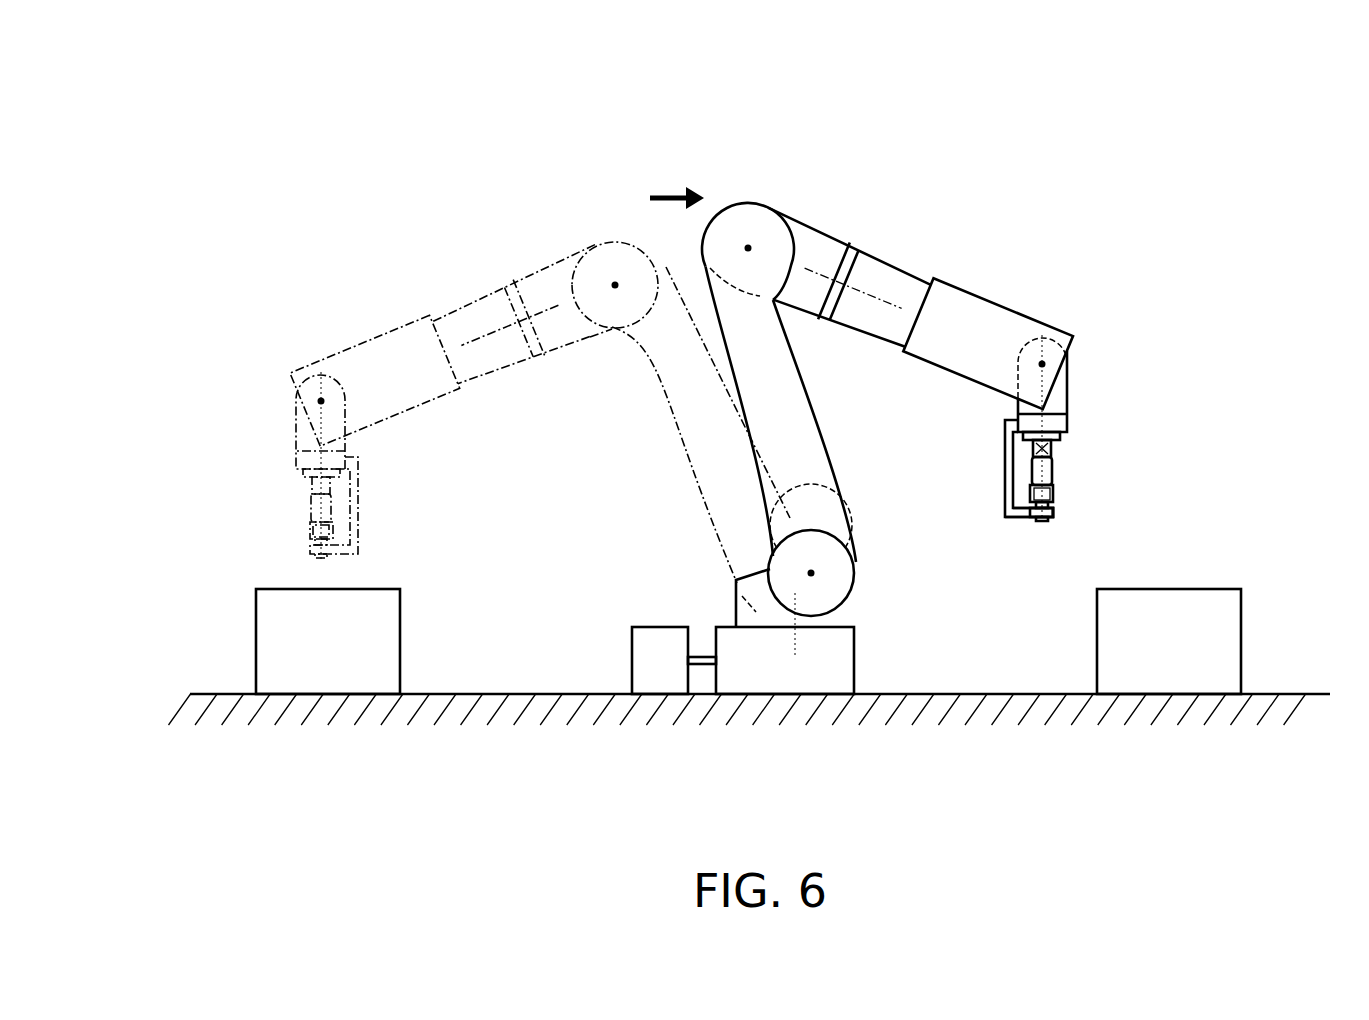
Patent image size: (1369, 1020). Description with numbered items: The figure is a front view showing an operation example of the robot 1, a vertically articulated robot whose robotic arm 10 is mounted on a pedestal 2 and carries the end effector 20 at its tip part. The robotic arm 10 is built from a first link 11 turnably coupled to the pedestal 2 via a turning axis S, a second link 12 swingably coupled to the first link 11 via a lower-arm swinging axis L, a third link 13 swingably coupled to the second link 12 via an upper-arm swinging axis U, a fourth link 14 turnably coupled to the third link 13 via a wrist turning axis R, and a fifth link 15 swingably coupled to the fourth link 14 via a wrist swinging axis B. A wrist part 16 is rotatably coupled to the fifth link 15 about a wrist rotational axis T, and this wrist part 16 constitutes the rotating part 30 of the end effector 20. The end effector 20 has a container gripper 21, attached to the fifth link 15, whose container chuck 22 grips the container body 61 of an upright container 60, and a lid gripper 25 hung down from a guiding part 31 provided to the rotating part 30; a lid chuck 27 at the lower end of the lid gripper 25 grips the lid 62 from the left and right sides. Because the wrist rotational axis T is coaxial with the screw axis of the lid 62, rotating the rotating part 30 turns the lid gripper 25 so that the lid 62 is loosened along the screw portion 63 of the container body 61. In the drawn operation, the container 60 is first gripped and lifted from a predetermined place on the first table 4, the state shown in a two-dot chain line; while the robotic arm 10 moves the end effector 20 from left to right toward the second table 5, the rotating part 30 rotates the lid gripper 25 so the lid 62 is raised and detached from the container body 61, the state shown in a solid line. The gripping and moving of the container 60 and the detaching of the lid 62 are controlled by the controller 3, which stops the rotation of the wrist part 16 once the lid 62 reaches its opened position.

The robot 1 is at (670, 127).
The pedestal 2 is at (768, 683).
The controller 3 is at (656, 683).
The first table 4 is at (270, 645).
The second table 5 is at (1228, 600).
The robotic arm 10 is at (915, 420).
The first link 11 is at (752, 577).
The second link 12 is at (816, 438).
The third link 13 is at (828, 245).
The fourth link 14 is at (978, 303).
The fifth link 15 is at (1070, 428).
The wrist part 16 is at (685, 414).
The end effector 20 is at (1225, 425).
The container gripper 21 is at (1010, 522).
The container chuck 22 is at (1040, 520).
The lid gripper 25 is at (1058, 478).
The lid chuck 27 is at (1057, 488).
The rotating part 30 is at (1060, 437).
The guiding part 31 is at (1055, 456).
The container 60 is at (1213, 512).
The container body 61 is at (1057, 510).
The lid 62 is at (1057, 495).
The screw portion 63 is at (1057, 500).
The upper-arm swinging axis U is at (749, 247).
The wrist turning axis R is at (898, 305).
The wrist swinging axis B is at (1044, 364).
The wrist rotational axis T is at (1055, 450).
The lower-arm swinging axis L is at (813, 573).
The turning axis S is at (797, 640).